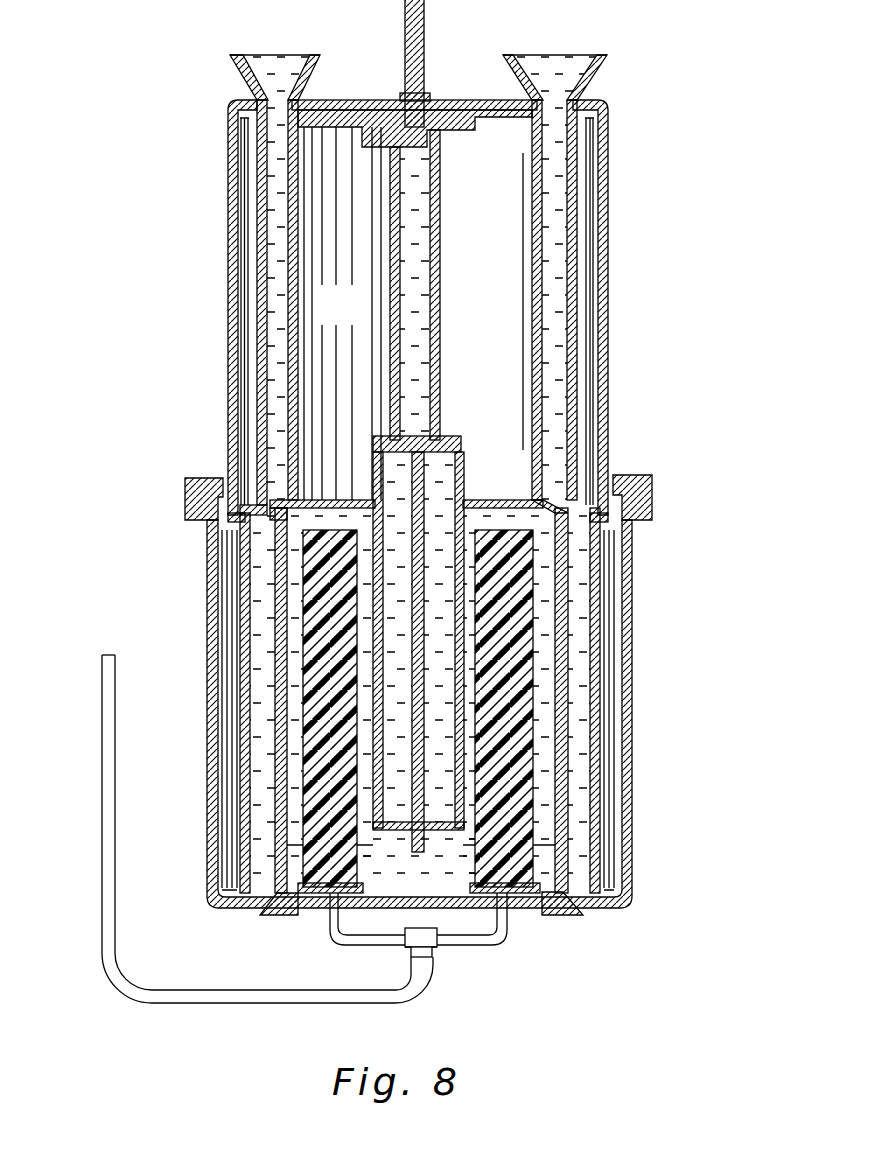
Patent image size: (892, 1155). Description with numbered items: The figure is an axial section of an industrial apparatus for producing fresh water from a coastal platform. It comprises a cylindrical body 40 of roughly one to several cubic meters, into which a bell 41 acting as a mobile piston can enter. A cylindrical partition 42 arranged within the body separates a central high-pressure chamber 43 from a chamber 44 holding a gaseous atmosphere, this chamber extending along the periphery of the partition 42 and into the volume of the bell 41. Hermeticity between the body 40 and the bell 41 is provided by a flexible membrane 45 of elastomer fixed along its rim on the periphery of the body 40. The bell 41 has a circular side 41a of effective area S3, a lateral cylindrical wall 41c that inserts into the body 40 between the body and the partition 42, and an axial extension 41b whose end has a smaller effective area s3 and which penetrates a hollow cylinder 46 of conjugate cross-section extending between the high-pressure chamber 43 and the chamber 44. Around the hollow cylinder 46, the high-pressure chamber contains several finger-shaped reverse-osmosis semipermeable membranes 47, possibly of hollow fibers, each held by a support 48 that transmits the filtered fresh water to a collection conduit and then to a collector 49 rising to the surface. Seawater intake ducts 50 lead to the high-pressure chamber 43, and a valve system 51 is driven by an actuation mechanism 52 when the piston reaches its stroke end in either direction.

The cylindrical body 40 is at (211, 589).
The bell 41 is at (460, 91).
The circular side 41a is at (345, 100).
The axial extension 41b is at (452, 434).
The lateral cylindrical wall 41c is at (588, 253).
The cylindrical partition 42 is at (243, 680).
The high-pressure chamber 43 is at (265, 823).
The chamber with gaseous atmosphere 44 is at (352, 317).
The flexible membrane 45 is at (232, 332).
The hollow cylinder 46 is at (460, 477).
The reverse-osmosis selective semipermeable membrane 47 is at (540, 770).
The support 48 is at (315, 895).
The collector 49 is at (432, 962).
The seawater intake duct 50 is at (270, 208).
The valve system 51 is at (565, 617).
The actuation mechanism 52 is at (378, 498).